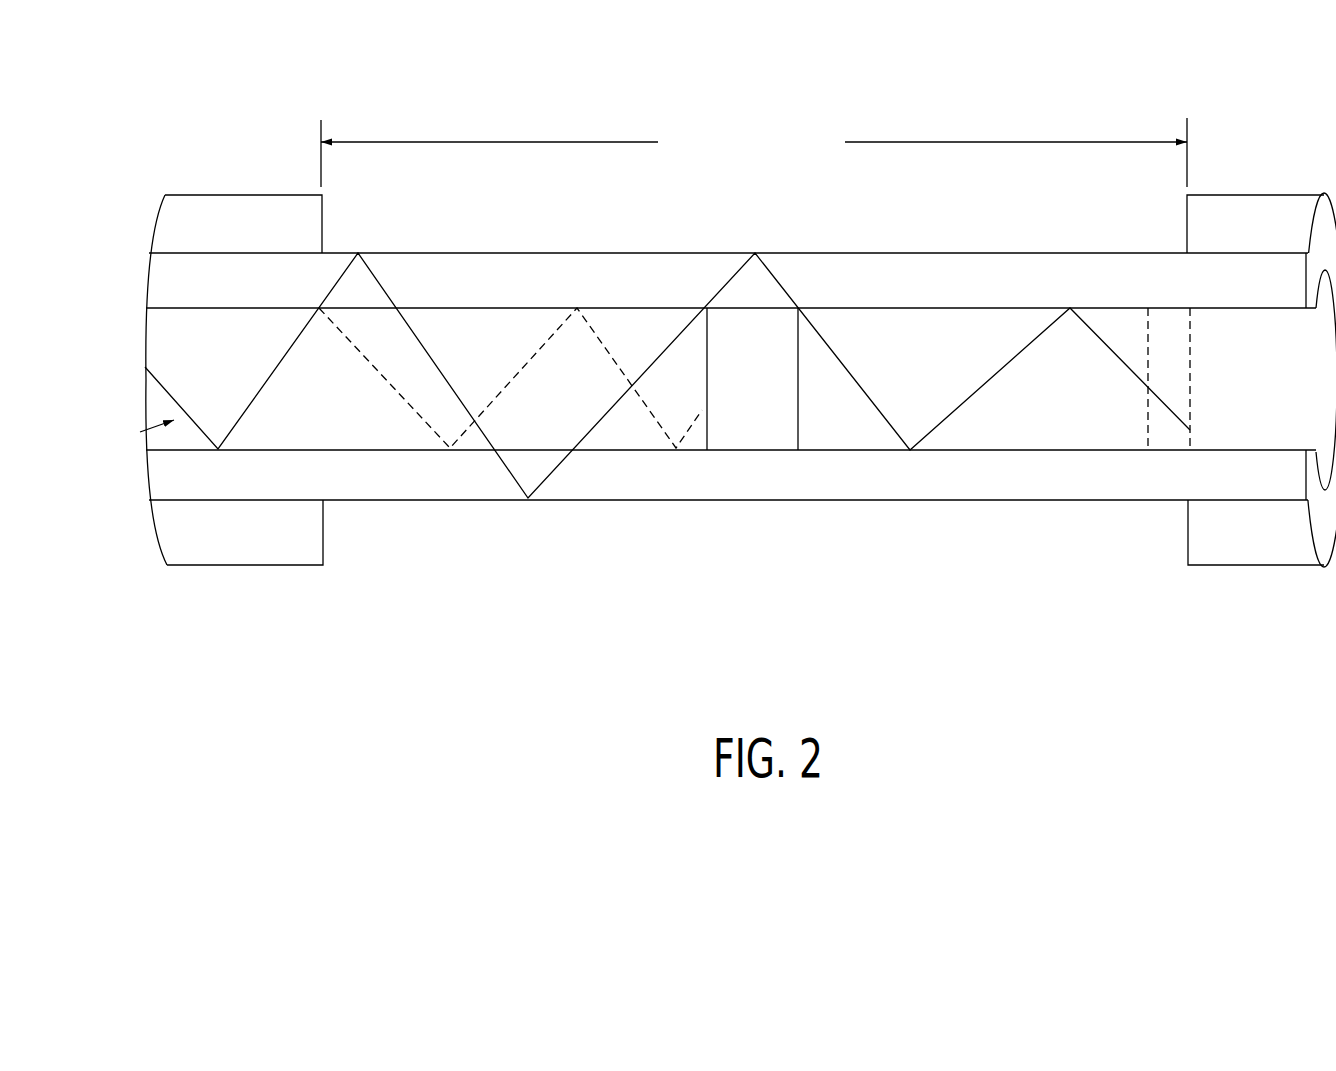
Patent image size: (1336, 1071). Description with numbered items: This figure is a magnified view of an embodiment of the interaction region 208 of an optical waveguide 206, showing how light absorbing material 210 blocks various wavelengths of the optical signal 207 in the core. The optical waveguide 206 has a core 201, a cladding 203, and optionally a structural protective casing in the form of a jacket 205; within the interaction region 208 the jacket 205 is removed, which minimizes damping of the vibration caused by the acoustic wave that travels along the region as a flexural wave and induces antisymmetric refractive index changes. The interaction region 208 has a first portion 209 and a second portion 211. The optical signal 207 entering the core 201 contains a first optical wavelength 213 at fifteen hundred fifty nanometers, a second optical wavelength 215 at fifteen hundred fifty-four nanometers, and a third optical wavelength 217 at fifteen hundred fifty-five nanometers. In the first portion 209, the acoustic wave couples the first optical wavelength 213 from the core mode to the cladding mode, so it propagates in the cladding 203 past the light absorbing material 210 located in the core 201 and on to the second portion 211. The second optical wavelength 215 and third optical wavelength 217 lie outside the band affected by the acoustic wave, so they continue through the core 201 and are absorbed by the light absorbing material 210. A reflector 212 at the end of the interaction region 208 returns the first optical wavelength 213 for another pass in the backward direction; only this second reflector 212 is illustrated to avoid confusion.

The core 201 is at (694, 379).
The cladding 203 is at (146, 278).
The jacket 205 is at (148, 222).
The optical waveguide 206 is at (903, 666).
The optical signal 207 is at (202, 418).
The interaction region 208 is at (754, 154).
The first portion 209 is at (535, 207).
The light absorbing material 210 is at (750, 393).
The second portion 211 is at (1035, 207).
The reflector 212 is at (1172, 474).
The first optical wavelength 213 is at (378, 214).
The second optical wavelength 215 is at (358, 358).
The third optical wavelength 217 is at (405, 401).